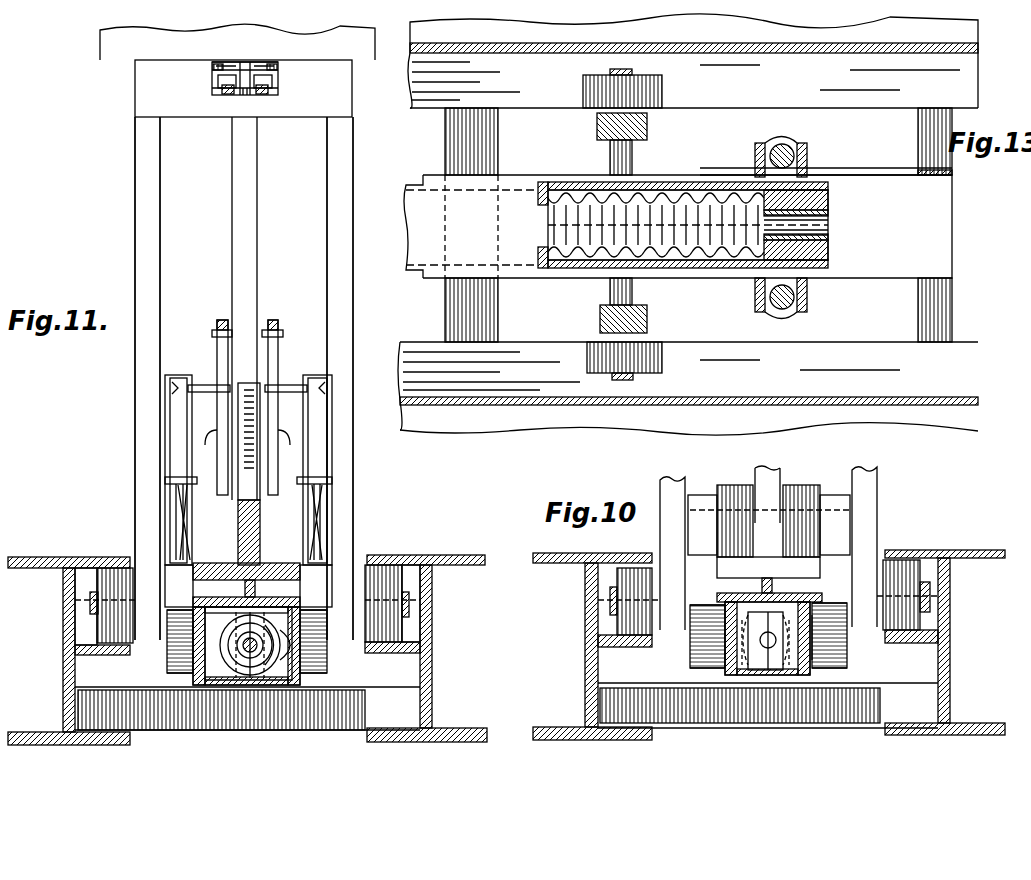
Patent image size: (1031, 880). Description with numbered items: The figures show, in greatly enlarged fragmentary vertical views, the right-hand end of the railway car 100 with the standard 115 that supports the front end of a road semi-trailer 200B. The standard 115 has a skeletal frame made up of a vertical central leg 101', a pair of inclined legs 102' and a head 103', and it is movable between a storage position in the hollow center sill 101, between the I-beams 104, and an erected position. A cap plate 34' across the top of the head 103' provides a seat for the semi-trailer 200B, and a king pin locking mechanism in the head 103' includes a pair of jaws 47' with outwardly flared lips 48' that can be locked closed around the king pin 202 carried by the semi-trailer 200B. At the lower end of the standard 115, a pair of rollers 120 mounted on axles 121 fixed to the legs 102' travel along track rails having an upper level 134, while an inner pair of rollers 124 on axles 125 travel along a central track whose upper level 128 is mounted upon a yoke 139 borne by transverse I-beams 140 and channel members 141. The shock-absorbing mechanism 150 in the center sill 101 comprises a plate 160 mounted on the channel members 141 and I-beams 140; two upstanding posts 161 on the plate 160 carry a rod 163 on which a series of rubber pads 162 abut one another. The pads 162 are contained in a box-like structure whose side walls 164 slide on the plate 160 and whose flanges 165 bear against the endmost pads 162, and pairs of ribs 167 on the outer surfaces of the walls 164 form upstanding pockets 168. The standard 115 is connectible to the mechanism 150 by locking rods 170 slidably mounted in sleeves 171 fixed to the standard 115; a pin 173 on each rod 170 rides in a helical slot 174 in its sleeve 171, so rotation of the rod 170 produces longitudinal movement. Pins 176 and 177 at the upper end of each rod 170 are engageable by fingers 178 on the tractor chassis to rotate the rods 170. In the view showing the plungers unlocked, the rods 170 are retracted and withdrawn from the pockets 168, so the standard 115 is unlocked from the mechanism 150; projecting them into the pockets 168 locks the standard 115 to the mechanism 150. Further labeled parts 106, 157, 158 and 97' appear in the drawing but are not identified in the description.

In FIG. 11, the railway car 100 is at (475, 672).
In FIG. 13, the railway car 100 is at (1003, 292).
In FIG. 10, the railway car 100 is at (998, 697).
In FIG. 11, the hollow center sill 101 is at (219, 698).
In FIG. 13, the hollow center sill 101 is at (412, 322).
In FIG. 10, the hollow center sill 101 is at (733, 705).
In FIG. 11, the vertical central leg 101' is at (270, 308).
In FIG. 10, the vertical central leg 101' is at (778, 478).
In FIG. 11, the inclined legs 102' is at (213, 378).
In FIG. 13, the inclined legs 102' is at (645, 223).
In FIG. 10, the inclined legs 102' is at (777, 529).
In FIG. 11, the head 103' is at (194, 90).
In FIG. 11, the I-beams 104 is at (63, 610).
In FIG. 13, the I-beams 104 is at (462, 50).
In FIG. 10, the I-beams 104 is at (585, 640).
In FIG. 11, the flange 106 is at (36, 557).
In FIG. 10, the flange 106 is at (573, 553).
In FIG. 11, the standard 115 is at (125, 180).
In FIG. 10, the standard 115 is at (884, 472).
In FIG. 11, the rollers 120 is at (113, 568).
In FIG. 13, the rollers 120 is at (655, 97).
In FIG. 10, the rollers 120 is at (617, 580).
In FIG. 11, the axles 121 is at (90, 600).
In FIG. 13, the axles 121 is at (633, 73).
In FIG. 10, the axles 121 is at (610, 600).
In FIG. 10, the inner rollers 124 is at (736, 488).
In FIG. 10, the axles 125 is at (840, 504).
In FIG. 11, the upper level 128 is at (278, 563).
In FIG. 10, the upper level 128 is at (812, 560).
In FIG. 11, the upper level 134 is at (118, 661).
In FIG. 10, the upper level 134 is at (610, 648).
In FIG. 11, the yoke 139 is at (286, 598).
In FIG. 10, the yoke 139 is at (797, 590).
In FIG. 11, the transverse I-beams 140 is at (181, 718).
In FIG. 13, the transverse I-beams 140 is at (925, 318).
In FIG. 10, the transverse I-beams 140 is at (678, 705).
In FIG. 13, the channel members 141 is at (480, 125).
In FIG. 11, the shock-absorbing mechanism 150 is at (262, 676).
In FIG. 13, the shock-absorbing mechanism 150 is at (590, 270).
In FIG. 10, the shock-absorbing mechanism 150 is at (736, 636).
In FIG. 11, the guide rod 157 is at (228, 318).
In FIG. 11, the rod plate 158 is at (213, 334).
In FIG. 11, the plate 160 is at (222, 686).
In FIG. 13, the plate 160 is at (690, 182).
In FIG. 10, the plate 160 is at (802, 674).
In FIG. 11, the upstanding posts 161 is at (197, 612).
In FIG. 13, the upstanding posts 161 is at (540, 213).
In FIG. 10, the upstanding posts 161 is at (765, 664).
In FIG. 11, the rubber pads 162 is at (300, 675).
In FIG. 13, the rubber pads 162 is at (700, 262).
In FIG. 10, the rubber pads 162 is at (815, 638).
In FIG. 11, the rod 163 is at (252, 660).
In FIG. 13, the rod 163 is at (830, 222).
In FIG. 10, the rod 163 is at (769, 650).
In FIG. 11, the side walls 164 is at (282, 650).
In FIG. 13, the side walls 164 is at (700, 186).
In FIG. 11, the flanges 165 is at (215, 665).
In FIG. 13, the flanges 165 is at (538, 190).
In FIG. 10, the flanges 165 is at (720, 670).
In FIG. 11, the ribs 167 is at (185, 645).
In FIG. 13, the ribs 167 is at (776, 145).
In FIG. 10, the ribs 167 is at (840, 660).
In FIG. 13, the pockets 168 is at (808, 167).
In FIG. 11, the locking rods 170 is at (175, 418).
In FIG. 13, the locking rods 170 is at (800, 155).
In FIG. 11, the sleeves 171 is at (175, 500).
In FIG. 11, the pin 173 is at (170, 480).
In FIG. 11, the helical slot 174 is at (182, 552).
In FIG. 11, the pin 176 is at (180, 388).
In FIG. 11, the pin 177 is at (205, 385).
In FIG. 11, the fingers 178 is at (219, 420).
In FIG. 11, the road semi-trailer 200B is at (90, 56).
In FIG. 11, the king pin 202 is at (246, 67).
In FIG. 11, the cap plate 34' is at (262, 48).
In FIG. 11, the jaws 47' is at (240, 74).
In FIG. 11, the outwardly flared lips 48' is at (242, 97).
In FIG. 11, the clamp pin 97' is at (219, 115).